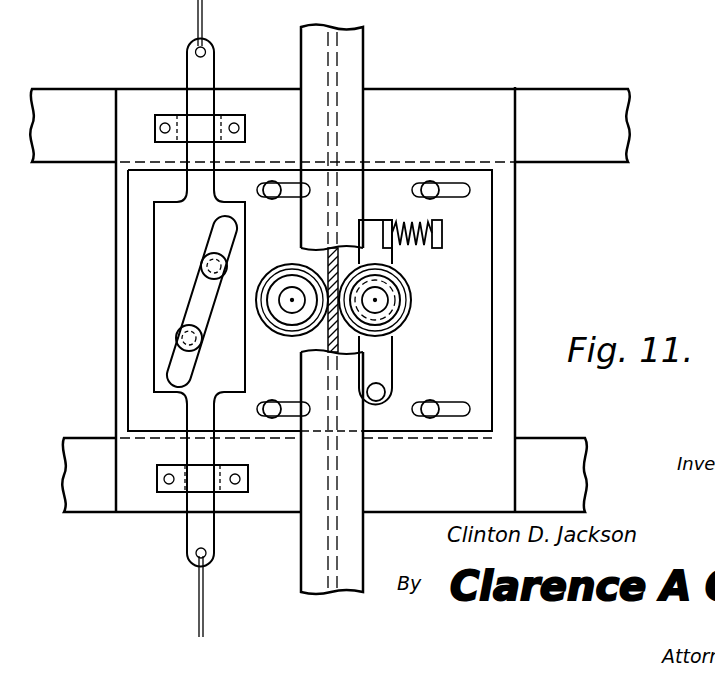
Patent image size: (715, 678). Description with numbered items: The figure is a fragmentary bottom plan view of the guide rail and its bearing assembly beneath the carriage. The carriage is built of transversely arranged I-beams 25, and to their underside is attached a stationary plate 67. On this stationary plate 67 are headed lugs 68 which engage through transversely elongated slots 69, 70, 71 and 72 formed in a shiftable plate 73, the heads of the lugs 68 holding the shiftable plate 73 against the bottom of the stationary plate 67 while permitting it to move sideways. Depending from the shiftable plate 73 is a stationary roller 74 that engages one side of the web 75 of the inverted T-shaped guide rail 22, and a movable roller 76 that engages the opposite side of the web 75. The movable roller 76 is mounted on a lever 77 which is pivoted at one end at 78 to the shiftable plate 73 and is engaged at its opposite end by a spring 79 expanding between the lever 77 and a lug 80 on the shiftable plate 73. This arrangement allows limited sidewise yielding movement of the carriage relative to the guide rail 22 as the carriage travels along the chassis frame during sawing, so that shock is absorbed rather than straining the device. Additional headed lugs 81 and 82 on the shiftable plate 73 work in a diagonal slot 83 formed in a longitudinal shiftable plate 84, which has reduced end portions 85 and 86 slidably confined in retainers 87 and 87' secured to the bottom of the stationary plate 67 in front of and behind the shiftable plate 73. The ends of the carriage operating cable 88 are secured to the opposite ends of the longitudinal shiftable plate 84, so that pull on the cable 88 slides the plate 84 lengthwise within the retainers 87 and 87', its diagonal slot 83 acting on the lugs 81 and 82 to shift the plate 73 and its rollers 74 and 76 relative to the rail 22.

The guide rail 22 is at (302, 558).
The I-beams 25 is at (613, 148).
The stationary plate 67 is at (518, 297).
The headed lugs 68 is at (273, 181).
The transversely elongated slot 69 is at (292, 198).
The transversely elongated slot 70 is at (284, 401).
The transversely elongated slot 71 is at (462, 198).
The transversely elongated slot 72 is at (456, 402).
The shiftable plate 73 is at (480, 290).
The stationary roller 74 is at (285, 288).
The web 75 is at (328, 333).
The movable roller 76 is at (405, 317).
The lever 77 is at (383, 360).
The pivot 78 is at (384, 401).
The spring 79 is at (420, 249).
The lug 80 is at (443, 246).
The headed lug 81 is at (203, 260).
The headed lug 82 is at (187, 327).
The diagonal slot 83 is at (208, 305).
The longitudinal shiftable plate 84 is at (162, 272).
The reduced end portion 85 is at (190, 69).
The reduced end portion 86 is at (192, 532).
The retainer 87 is at (210, 97).
The retainer 87' is at (198, 502).
The carriage operating cable 88 is at (196, 9).